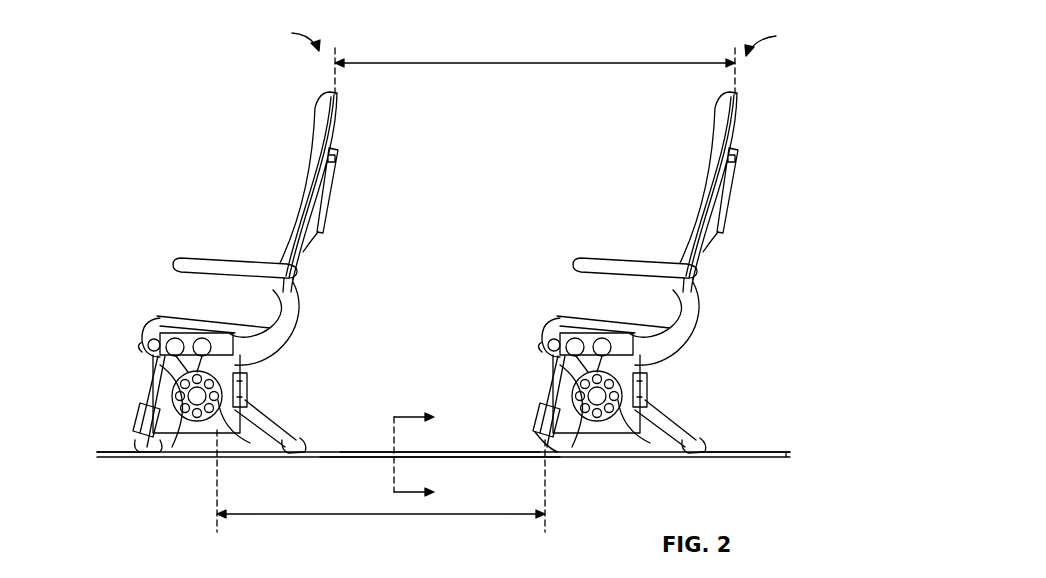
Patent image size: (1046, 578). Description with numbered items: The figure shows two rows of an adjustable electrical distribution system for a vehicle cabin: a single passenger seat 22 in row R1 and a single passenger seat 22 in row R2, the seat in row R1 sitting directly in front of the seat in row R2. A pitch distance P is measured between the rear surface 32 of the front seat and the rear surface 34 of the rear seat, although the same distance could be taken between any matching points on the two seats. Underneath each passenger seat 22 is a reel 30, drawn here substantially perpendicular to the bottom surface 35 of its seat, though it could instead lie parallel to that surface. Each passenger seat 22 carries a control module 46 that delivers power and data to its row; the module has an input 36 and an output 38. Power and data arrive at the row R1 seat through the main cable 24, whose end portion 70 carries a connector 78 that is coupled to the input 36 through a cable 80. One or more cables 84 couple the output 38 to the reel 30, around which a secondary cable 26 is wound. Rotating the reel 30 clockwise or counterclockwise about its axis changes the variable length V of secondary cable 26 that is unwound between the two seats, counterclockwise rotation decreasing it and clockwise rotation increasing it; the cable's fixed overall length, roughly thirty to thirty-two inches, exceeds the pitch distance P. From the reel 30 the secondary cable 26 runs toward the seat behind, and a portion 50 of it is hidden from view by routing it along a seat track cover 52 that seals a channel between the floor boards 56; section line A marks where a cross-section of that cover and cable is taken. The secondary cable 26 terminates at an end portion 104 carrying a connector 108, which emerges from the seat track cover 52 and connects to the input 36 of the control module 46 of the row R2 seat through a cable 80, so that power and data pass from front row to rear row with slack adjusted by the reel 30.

The passenger seat 22 is at (268, 103).
The main cable 24 is at (115, 452).
The secondary cable 26 is at (462, 460).
The reel 30 is at (243, 390).
The rear surface 32 is at (333, 114).
The rear surface 34 is at (734, 116).
The bottom surface 35 is at (158, 389).
The input 36 is at (177, 339).
The output 38 is at (205, 339).
The control module 46 is at (165, 324).
The portion of the secondary cable 50 is at (343, 444).
The seat track cover 52 is at (455, 452).
The floor board 56 is at (748, 452).
The end portion 70 is at (148, 454).
The connector 78 is at (138, 420).
The cable 80 is at (164, 450).
The cable 84 is at (148, 354).
The end portion 104 is at (560, 458).
The connector 108 is at (545, 428).
The pitch distance P is at (535, 63).
The variable length V is at (375, 519).
The row R1 is at (290, 37).
The row R2 is at (776, 40).
The section line A- A is at (423, 455).